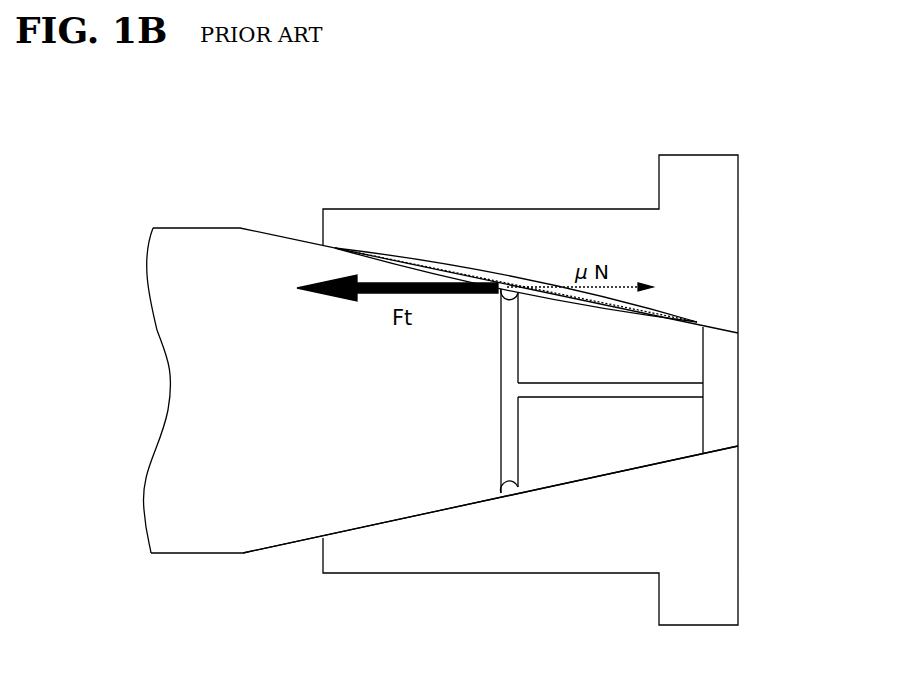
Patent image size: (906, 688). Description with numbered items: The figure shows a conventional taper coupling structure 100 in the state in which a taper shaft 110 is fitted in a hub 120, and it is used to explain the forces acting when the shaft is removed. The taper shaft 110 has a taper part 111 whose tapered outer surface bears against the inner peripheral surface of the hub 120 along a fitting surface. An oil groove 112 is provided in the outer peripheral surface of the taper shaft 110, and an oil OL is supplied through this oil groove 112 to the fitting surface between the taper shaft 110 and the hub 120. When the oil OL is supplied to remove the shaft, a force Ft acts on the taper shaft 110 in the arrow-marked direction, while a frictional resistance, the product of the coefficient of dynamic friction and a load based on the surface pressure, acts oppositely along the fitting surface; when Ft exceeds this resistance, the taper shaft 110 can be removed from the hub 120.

The coupling structure 100 is at (313, 143).
The taper shaft 110 is at (218, 227).
The taper part 111 is at (263, 549).
The oil groove 112 is at (508, 497).
The hub 120 is at (492, 209).
The oil OL is at (445, 267).